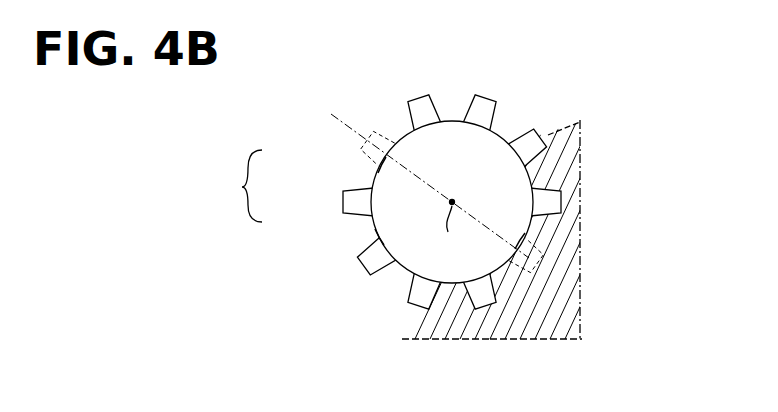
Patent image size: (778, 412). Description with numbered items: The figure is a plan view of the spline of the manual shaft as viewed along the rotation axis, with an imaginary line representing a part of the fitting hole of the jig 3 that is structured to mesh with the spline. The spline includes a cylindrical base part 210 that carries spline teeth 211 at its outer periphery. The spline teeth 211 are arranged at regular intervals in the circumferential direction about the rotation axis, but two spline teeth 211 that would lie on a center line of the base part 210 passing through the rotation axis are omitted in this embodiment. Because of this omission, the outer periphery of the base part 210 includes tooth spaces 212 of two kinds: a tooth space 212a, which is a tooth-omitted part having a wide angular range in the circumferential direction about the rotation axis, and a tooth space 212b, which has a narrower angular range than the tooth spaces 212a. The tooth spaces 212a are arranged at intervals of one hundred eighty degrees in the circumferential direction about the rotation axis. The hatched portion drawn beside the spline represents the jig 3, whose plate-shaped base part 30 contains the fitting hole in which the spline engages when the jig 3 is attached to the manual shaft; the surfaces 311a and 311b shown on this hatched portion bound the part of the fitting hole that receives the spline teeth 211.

The jig 3 is at (536, 230).
The base part 30 is at (536, 230).
The first wall surface 311a is at (540, 318).
The second wall surface 311b is at (558, 152).
The cylindrical base part 210 is at (423, 162).
The spline teeth 211 is at (427, 96).
The recess between teeth 212 is at (423, 204).
The tooth space 212a is at (375, 174).
The tooth space 212b is at (363, 228).